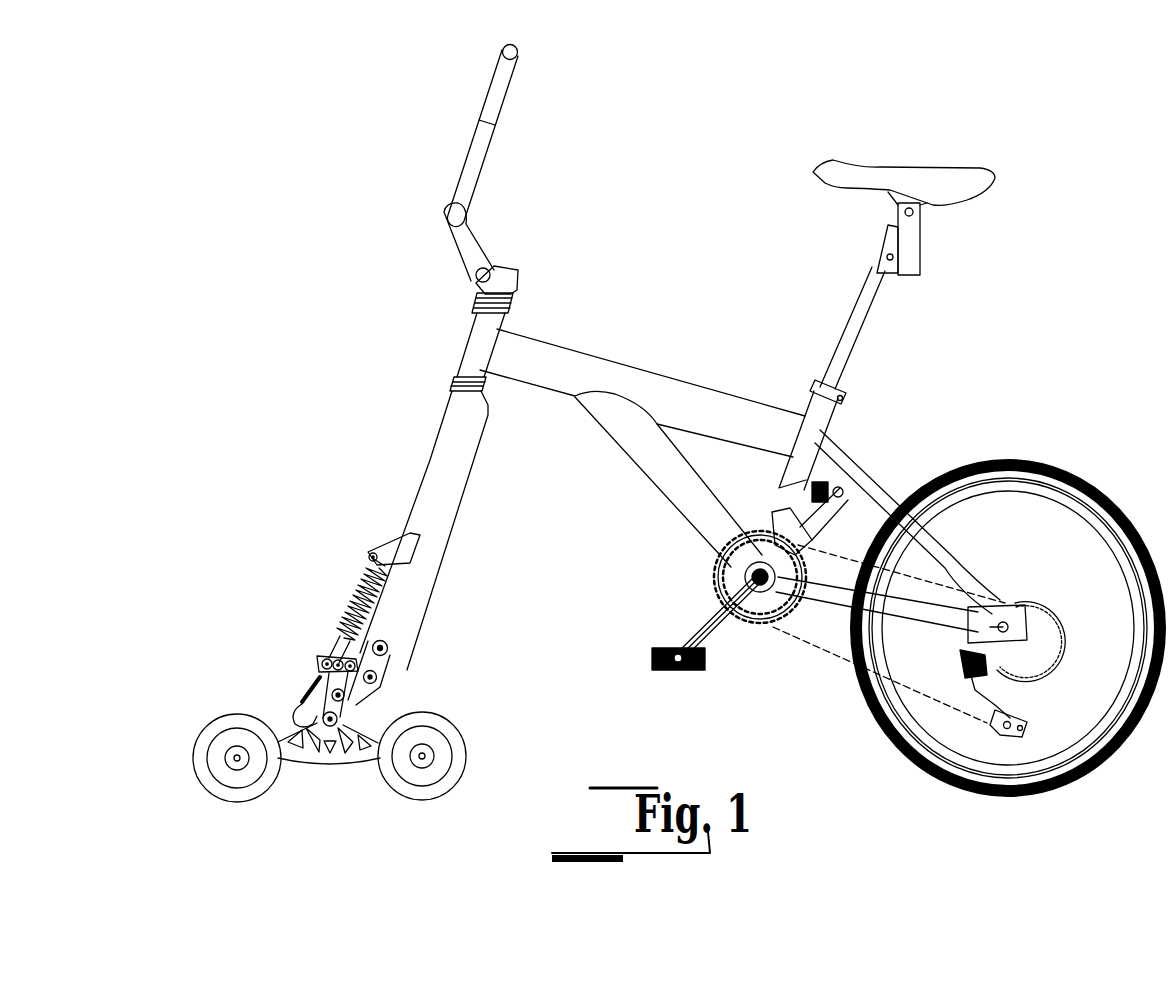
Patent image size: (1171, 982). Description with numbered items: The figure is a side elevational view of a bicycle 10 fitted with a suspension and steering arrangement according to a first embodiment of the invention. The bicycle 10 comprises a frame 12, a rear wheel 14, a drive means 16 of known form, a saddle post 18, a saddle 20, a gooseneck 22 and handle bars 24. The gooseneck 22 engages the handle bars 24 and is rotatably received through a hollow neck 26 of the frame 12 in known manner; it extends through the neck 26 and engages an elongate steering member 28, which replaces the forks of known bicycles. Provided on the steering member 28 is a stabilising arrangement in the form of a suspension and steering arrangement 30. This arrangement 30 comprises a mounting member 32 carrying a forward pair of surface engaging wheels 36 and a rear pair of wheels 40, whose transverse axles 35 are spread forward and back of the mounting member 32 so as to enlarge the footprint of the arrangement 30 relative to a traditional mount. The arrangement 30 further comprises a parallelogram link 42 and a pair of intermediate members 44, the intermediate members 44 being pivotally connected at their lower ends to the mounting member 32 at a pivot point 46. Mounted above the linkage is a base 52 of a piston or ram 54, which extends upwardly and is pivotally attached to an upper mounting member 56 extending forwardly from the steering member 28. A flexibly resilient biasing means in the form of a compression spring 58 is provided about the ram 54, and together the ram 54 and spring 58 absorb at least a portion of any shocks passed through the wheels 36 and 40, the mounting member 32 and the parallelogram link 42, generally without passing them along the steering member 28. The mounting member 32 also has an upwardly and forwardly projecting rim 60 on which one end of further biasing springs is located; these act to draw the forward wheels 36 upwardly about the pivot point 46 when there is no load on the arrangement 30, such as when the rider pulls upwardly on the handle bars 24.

The bicycle 10 is at (1092, 58).
The frame 12 is at (628, 362).
The rear wheel 14 is at (1040, 462).
The drive means 16 is at (760, 638).
The saddle post 18 is at (843, 318).
The saddle 20 is at (918, 167).
The gooseneck 22 is at (496, 258).
The handle bars 24 is at (490, 149).
The hollow neck 26 is at (477, 350).
The elongate steering member 28 is at (458, 490).
The suspension and steering arrangement 30 is at (250, 605).
The mounting member 32 is at (330, 770).
The transverse axles 35 is at (225, 757).
The forward wheels 36 is at (212, 724).
The rear wheels 40 is at (458, 728).
The parallelogram link 42 is at (402, 658).
The intermediate members 44 is at (352, 692).
The pivot point 46 is at (322, 733).
The base 52 is at (325, 652).
The ram 54 is at (340, 613).
The upper mounting member 56 is at (390, 550).
The compression spring 58 is at (378, 587).
The rim 60 is at (290, 710).